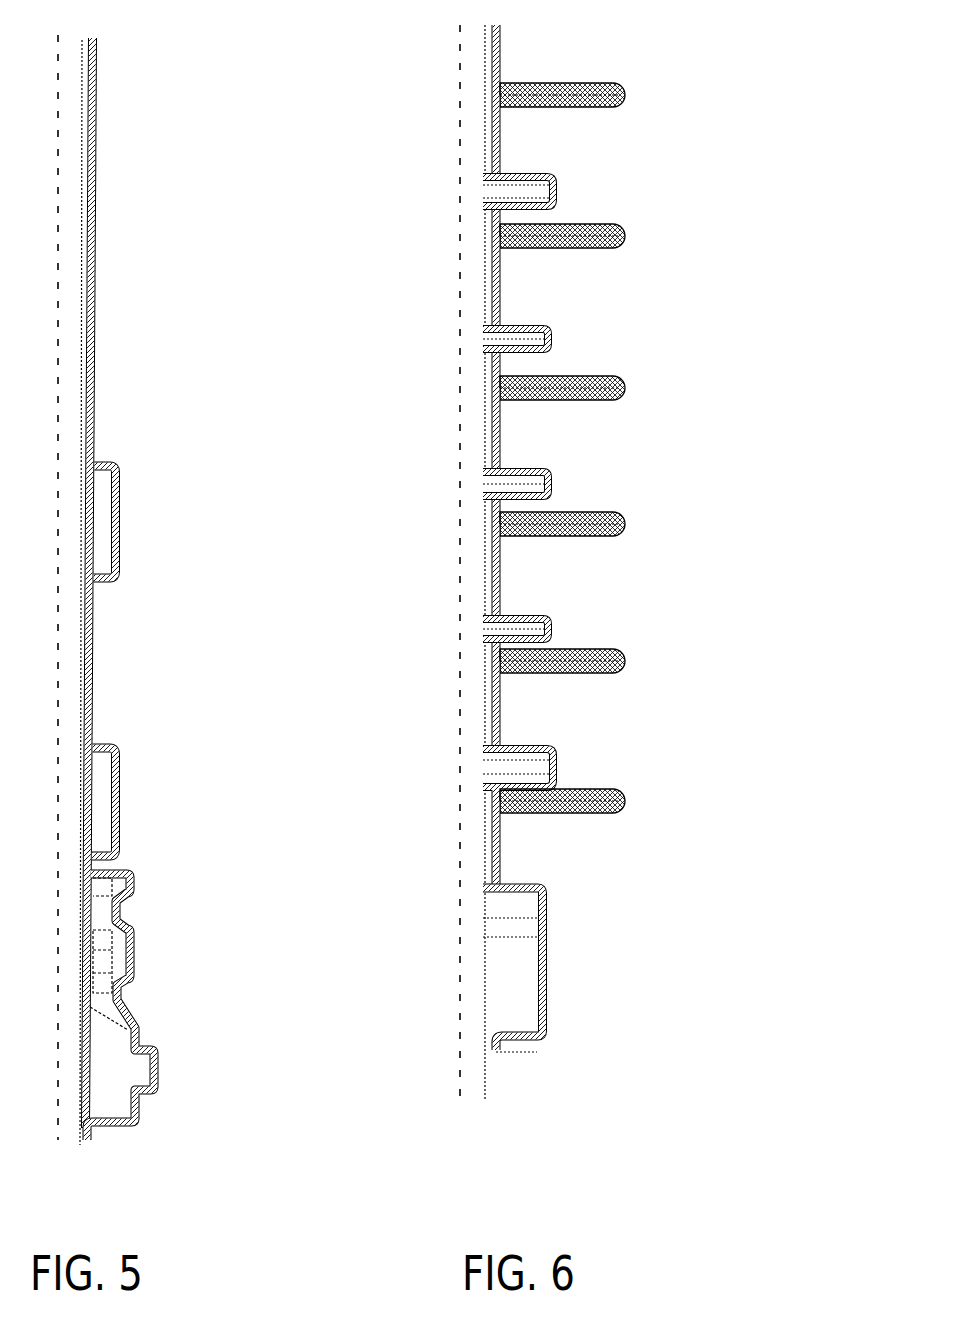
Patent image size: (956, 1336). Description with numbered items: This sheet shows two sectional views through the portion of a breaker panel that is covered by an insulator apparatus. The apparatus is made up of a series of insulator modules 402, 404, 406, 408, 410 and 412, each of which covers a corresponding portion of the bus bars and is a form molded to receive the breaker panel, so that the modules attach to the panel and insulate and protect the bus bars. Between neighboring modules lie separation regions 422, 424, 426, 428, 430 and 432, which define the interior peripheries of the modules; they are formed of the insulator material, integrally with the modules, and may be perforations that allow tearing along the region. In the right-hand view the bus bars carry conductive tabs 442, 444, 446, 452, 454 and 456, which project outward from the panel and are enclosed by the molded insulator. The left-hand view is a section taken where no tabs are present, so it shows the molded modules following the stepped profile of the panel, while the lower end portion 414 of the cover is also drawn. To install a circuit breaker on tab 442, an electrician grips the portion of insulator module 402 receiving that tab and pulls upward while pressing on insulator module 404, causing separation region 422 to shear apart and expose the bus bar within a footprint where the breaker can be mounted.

In FIG. 5, the insulator module 402 is at (95, 97).
In FIG. 6, the insulator module 402 is at (500, 45).
In FIG. 5, the insulator module 404 is at (95, 230).
In FIG. 6, the insulator module 404 is at (553, 180).
In FIG. 5, the insulator module 406 is at (95, 352).
In FIG. 6, the insulator module 406 is at (553, 342).
In FIG. 5, the insulator module 408 is at (117, 502).
In FIG. 6, the insulator module 408 is at (552, 493).
In FIG. 5, the insulator module 410 is at (93, 667).
In FIG. 6, the insulator module 410 is at (552, 632).
In FIG. 5, the insulator module 412 is at (117, 795).
In FIG. 6, the insulator module 412 is at (553, 775).
In FIG. 5, the end panel section 414 is at (133, 960).
In FIG. 6, the end panel section 414 is at (540, 945).
In FIG. 5, the separation region 422 is at (91, 155).
In FIG. 6, the separation region 422 is at (495, 142).
In FIG. 5, the separation region 424 is at (91, 280).
In FIG. 6, the separation region 424 is at (495, 258).
In FIG. 5, the separation region 426 is at (90, 417).
In FIG. 6, the separation region 426 is at (495, 417).
In FIG. 5, the separation region 428 is at (90, 595).
In FIG. 6, the separation region 428 is at (495, 582).
In FIG. 5, the separation region 430 is at (90, 725).
In FIG. 6, the separation region 430 is at (495, 712).
In FIG. 5, the separation region 432 is at (90, 867).
In FIG. 6, the separation region 432 is at (495, 852).
In FIG. 6, the conductive tab 442 is at (590, 97).
In FIG. 6, the conductive tab 444 is at (593, 388).
In FIG. 6, the conductive tab 446 is at (593, 662).
In FIG. 6, the conductive tab 452 is at (593, 238).
In FIG. 6, the conductive tab 454 is at (600, 528).
In FIG. 6, the conductive tab 456 is at (603, 803).